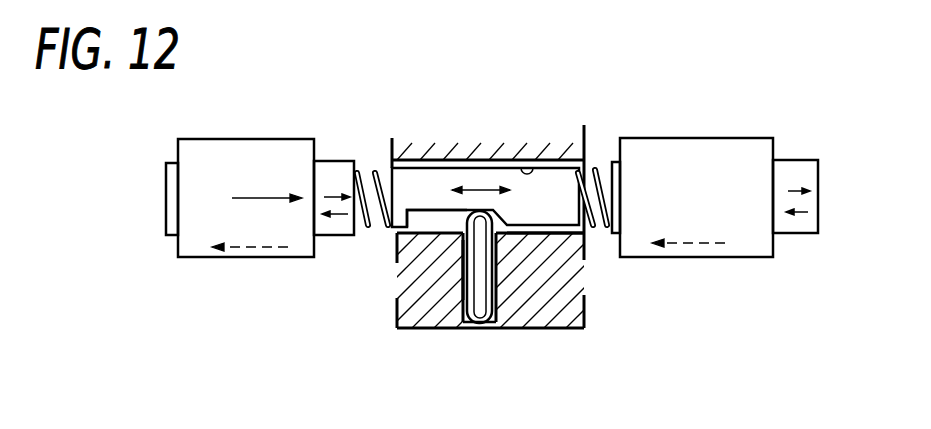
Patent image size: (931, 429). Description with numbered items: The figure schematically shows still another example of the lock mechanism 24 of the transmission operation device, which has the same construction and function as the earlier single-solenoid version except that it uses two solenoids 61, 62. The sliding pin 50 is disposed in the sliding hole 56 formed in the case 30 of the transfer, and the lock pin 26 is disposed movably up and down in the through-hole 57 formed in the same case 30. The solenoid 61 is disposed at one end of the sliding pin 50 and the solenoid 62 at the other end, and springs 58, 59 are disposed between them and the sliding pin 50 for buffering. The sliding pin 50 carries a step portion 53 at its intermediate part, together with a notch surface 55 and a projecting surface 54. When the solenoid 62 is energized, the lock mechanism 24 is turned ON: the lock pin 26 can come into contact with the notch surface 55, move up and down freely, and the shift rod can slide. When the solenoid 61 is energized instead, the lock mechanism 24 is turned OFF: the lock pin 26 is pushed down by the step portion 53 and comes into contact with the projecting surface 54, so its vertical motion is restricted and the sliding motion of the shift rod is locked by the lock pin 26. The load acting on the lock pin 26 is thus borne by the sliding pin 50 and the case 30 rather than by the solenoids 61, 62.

The lock mechanism 24 is at (333, 150).
The lock pin 26 is at (465, 273).
The case 30 is at (562, 157).
The sliding pin 50 is at (480, 175).
The step portion 53 is at (496, 242).
The projection surface 54 is at (565, 247).
The notch surface 55 is at (425, 214).
The sliding hole 56 is at (532, 172).
The through-hole 57 is at (452, 320).
The spring 58 is at (600, 168).
The spring 59 is at (357, 170).
The solenoid 61 is at (757, 242).
The solenoid 62 is at (195, 247).